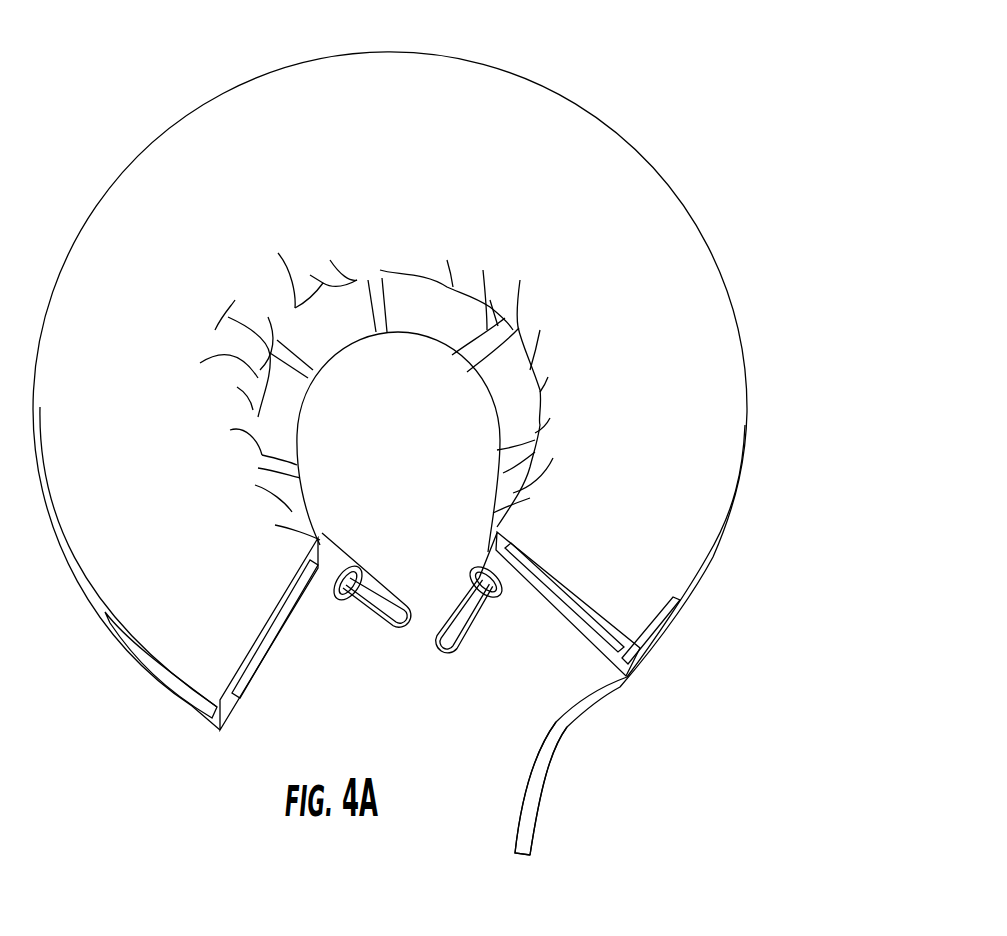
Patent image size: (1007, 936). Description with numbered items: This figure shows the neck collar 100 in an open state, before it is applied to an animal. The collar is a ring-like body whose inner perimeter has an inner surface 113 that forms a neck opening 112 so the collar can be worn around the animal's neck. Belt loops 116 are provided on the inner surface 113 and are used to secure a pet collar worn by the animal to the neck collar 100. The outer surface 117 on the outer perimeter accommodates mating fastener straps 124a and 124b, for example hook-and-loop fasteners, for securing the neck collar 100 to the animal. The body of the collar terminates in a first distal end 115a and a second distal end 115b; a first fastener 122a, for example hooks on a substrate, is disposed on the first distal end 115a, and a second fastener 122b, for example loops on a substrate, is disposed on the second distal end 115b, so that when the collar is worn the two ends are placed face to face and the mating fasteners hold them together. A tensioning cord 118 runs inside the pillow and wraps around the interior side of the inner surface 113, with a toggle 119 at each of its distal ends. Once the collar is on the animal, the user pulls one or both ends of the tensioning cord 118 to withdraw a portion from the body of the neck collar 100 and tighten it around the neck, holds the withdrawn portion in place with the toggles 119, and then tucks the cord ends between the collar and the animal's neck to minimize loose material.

The neck collar 100 is at (107, 48).
The neck opening 112 is at (420, 488).
The inner surface 113 is at (402, 297).
The belt loops 116 is at (480, 335).
The first distal end 115a is at (163, 584).
The second distal end 115b is at (590, 582).
The outer surface 117 is at (700, 592).
The tensioning cord 118 is at (345, 564).
The toggle 119 is at (337, 604).
The first fastener 122a is at (268, 640).
The second fastener 122b is at (564, 612).
The fastener strap 124a is at (170, 683).
The fastener strap 124b is at (557, 730).